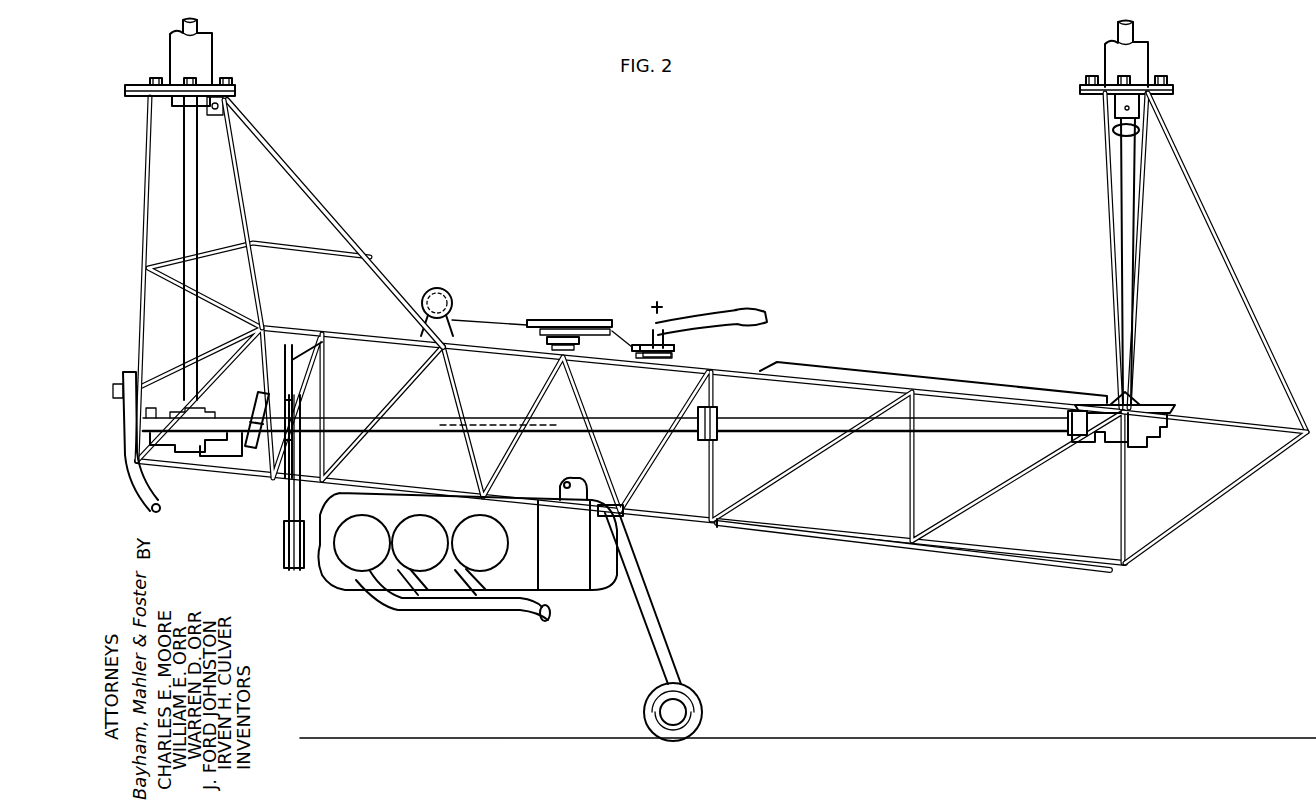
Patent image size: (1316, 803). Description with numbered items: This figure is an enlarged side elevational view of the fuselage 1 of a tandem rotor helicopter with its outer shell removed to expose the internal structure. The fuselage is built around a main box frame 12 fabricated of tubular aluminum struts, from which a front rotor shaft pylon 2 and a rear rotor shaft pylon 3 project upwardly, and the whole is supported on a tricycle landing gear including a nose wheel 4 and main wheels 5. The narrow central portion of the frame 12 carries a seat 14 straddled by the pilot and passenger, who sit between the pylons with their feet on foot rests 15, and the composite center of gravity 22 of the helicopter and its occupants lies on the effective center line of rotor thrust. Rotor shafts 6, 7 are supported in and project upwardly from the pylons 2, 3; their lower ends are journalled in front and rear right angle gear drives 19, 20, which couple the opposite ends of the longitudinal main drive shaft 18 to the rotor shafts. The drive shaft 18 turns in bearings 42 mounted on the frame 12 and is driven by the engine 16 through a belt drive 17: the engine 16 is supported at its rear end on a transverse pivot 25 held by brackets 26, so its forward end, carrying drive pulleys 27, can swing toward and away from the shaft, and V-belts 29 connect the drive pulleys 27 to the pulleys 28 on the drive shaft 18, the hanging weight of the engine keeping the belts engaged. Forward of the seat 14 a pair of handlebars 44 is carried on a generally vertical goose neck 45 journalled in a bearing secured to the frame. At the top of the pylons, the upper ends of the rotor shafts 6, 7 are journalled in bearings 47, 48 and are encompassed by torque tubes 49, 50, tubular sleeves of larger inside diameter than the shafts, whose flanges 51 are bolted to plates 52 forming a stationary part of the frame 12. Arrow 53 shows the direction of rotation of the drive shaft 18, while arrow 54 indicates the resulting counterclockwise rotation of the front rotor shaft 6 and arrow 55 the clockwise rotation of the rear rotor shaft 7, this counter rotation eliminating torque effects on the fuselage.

The fuselage 1 is at (782, 219).
The front rotor shaft pylon 2 is at (268, 127).
The rear rotor shaft pylon 3 is at (1085, 151).
The nose wheel 4 is at (146, 514).
The main wheels 5 is at (703, 705).
The front rotor shaft 6 is at (176, 212).
The rear rotor shaft 7 is at (1135, 303).
The main box frame 12 is at (1157, 556).
The seat 14 is at (978, 382).
The foot rests 15 is at (806, 536).
The engine 16 is at (363, 581).
The belt drive 17 is at (285, 498).
The main drive shaft 18 is at (600, 418).
The front right angle gear drive 19 is at (201, 456).
The rear right angle gear drive 20 is at (1138, 432).
The center of gravity 22 is at (657, 308).
The pivot 25 is at (567, 478).
The brackets 26 is at (571, 481).
The drive pulleys 27 is at (284, 558).
The pulleys 28 is at (316, 404).
The V-belts 29 is at (288, 513).
The bearings 42 is at (718, 412).
The handlebars 44 is at (673, 319).
The goose neck 45 is at (665, 341).
The bearing 47 is at (172, 102).
The bearing 48 is at (1112, 97).
The torque tube 49 is at (208, 60).
The torque tube 50 is at (1140, 58).
The flanges 51 is at (236, 85).
The plates 52 is at (238, 95).
The arrow 53 is at (496, 426).
The arrow 54 is at (178, 176).
The arrow 55 is at (1113, 128).